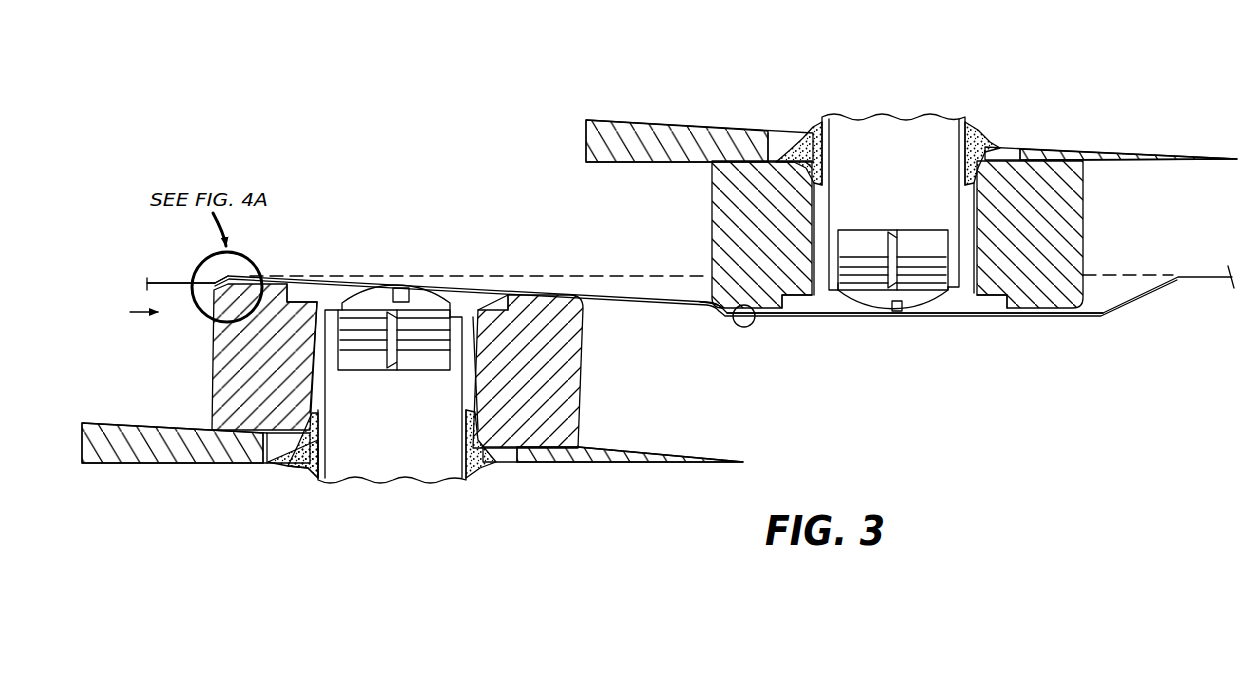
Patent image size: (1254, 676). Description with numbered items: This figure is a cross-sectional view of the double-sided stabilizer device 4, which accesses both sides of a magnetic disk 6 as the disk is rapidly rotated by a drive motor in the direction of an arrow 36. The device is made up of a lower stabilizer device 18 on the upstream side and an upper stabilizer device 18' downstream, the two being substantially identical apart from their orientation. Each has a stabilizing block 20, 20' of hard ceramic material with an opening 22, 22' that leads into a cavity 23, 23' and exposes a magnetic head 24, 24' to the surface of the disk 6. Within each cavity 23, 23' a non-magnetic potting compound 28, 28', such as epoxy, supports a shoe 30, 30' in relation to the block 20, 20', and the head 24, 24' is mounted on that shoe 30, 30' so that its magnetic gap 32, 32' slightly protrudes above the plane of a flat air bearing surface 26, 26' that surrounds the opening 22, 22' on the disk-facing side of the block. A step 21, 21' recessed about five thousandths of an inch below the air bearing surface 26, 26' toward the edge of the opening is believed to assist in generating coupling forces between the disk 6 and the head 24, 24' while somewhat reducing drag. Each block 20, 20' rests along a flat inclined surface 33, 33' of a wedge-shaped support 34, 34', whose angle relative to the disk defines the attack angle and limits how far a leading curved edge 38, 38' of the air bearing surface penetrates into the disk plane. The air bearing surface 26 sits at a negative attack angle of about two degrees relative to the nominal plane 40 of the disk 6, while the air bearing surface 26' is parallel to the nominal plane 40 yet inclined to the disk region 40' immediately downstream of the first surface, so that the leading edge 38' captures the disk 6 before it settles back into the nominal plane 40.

The double-sided stabilizer device 4 is at (490, 250).
The magnetic disk 6 is at (167, 282).
The lower stabilizer device 18 is at (199, 357).
The stabilizing block 20 is at (565, 371).
The step 21 is at (420, 266).
The opening 22 is at (389, 273).
The cavity 23 is at (394, 366).
The magnetic head 24 is at (429, 303).
The air bearing surface 26 is at (613, 398).
The potting compound 28 is at (380, 475).
The shoe 30 is at (392, 428).
The magnetic gap 32 is at (394, 300).
The inclined surface 33 is at (196, 415).
The wedge-shaped support 34 is at (172, 482).
The arrow 36 is at (130, 312).
The leading curved edge 38 is at (204, 301).
The nominal plane 40 is at (690, 258).
The upper stabilizer device 18' is at (701, 234).
The stabilizing block 20' is at (1074, 234).
The step 21' is at (894, 332).
The opening 22' is at (884, 329).
The cavity 23' is at (894, 230).
The magnetic head 24' is at (935, 295).
The air bearing surface 26' is at (956, 237).
The potting compound 28' is at (902, 122).
The shoe 30' is at (893, 169).
The magnetic gap 32' is at (893, 306).
The inclined surface 33' is at (686, 167).
The wedge-shaped support 34' is at (677, 100).
The leading curved edge 38' is at (674, 279).
The disk region 40' is at (838, 278).